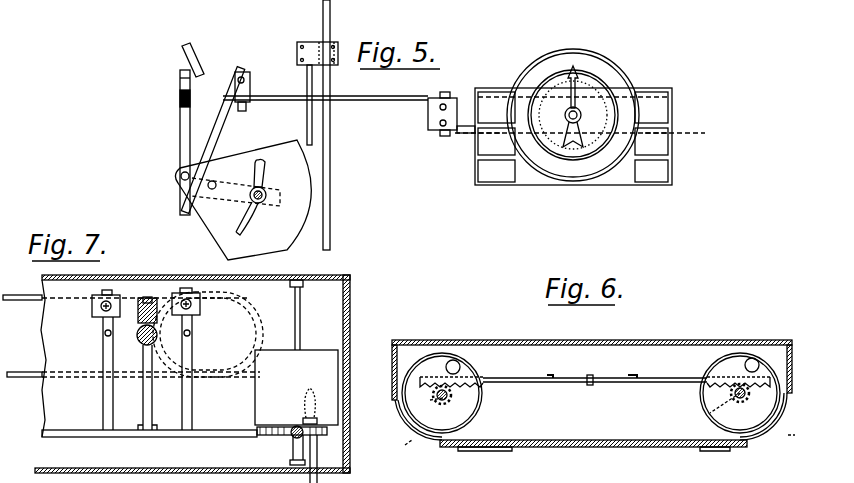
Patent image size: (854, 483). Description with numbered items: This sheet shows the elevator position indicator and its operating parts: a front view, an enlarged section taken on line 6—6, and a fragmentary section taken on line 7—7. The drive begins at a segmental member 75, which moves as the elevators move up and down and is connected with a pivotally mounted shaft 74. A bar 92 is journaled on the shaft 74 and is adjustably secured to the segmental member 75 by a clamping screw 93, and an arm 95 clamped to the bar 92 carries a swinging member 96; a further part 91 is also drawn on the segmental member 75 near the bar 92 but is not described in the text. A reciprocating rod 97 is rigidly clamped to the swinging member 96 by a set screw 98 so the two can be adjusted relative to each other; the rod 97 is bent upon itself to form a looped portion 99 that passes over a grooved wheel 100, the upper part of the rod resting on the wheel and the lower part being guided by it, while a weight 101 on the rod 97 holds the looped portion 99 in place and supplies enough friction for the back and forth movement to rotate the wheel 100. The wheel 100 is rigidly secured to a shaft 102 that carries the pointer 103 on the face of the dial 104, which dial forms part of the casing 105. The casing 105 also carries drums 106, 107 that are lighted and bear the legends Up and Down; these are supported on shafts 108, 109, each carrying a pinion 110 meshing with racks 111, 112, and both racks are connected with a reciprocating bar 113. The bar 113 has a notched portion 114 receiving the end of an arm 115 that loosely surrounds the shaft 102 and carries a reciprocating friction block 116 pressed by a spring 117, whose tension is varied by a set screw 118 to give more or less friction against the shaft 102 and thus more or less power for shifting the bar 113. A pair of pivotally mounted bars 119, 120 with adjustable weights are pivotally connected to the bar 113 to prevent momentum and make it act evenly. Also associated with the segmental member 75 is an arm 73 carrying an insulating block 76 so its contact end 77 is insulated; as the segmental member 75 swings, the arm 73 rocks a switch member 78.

In FIG. 5, the section line 6— 6 is at (579, 144).
In FIG. 6, the section line 7— 7 is at (605, 441).
In FIG. 5, the arm 73 is at (180, 136).
In FIG. 5, the shaft 74 is at (178, 177).
In FIG. 5, the segmental member 75 is at (330, 210).
In FIG. 5, the insulating block 76 is at (180, 100).
In FIG. 5, the contact end 77 is at (180, 84).
In FIG. 5, the member 78 is at (199, 52).
In FIG. 5, the handle 91 is at (252, 230).
In FIG. 5, the bar 92 is at (268, 185).
In FIG. 5, the clamping screw 93 is at (262, 203).
In FIG. 5, the arm 95 is at (216, 136).
In FIG. 5, the swinging member 96 is at (247, 80).
In FIG. 5, the reciprocating rod 97 is at (358, 96).
In FIG. 5, the set screw 98 is at (246, 107).
In FIG. 5, the looped portion 99 is at (620, 113).
In FIG. 5, the grooved wheel 100 is at (592, 108).
In FIG. 5, the weight 101 is at (436, 114).
In FIG. 5, the shaft 102 is at (568, 120).
In FIG. 7, the shaft 102 is at (157, 338).
In FIG. 5, the pointer 103 is at (575, 85).
In FIG. 5, the dial 104 is at (548, 60).
In FIG. 5, the casing 105 is at (672, 184).
In FIG. 7, the casing 105 is at (350, 298).
In FIG. 6, the casing 105 is at (660, 336).
In FIG. 6, the drum 106 is at (460, 362).
In FIG. 6, the drum 107 is at (748, 352).
In FIG. 6, the shaft 108 is at (443, 402).
In FIG. 6, the shaft 109 is at (780, 410).
In FIG. 6, the pinion 110 is at (452, 395).
In FIG. 6, the rack 111 is at (420, 388).
In FIG. 6, the rack 112 is at (770, 385).
In FIG. 7, the reciprocating bar 113 is at (226, 437).
In FIG. 6, the reciprocating bar 113 is at (530, 378).
In FIG. 7, the notched portion 114 is at (150, 437).
In FIG. 7, the arm 115 is at (152, 397).
In FIG. 7, the friction block 116 is at (157, 323).
In FIG. 7, the spring 117 is at (100, 317).
In FIG. 7, the set screw 118 is at (148, 297).
In FIG. 7, the pivotally mounted bar 119 is at (192, 414).
In FIG. 7, the pivotally mounted bar 120 is at (81, 406).